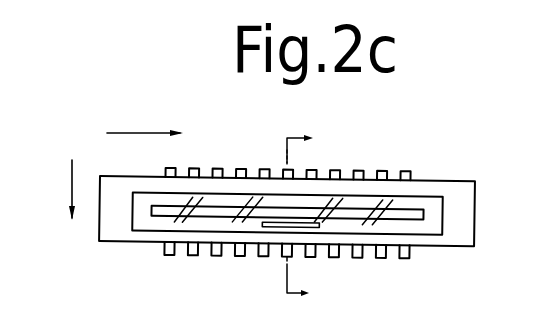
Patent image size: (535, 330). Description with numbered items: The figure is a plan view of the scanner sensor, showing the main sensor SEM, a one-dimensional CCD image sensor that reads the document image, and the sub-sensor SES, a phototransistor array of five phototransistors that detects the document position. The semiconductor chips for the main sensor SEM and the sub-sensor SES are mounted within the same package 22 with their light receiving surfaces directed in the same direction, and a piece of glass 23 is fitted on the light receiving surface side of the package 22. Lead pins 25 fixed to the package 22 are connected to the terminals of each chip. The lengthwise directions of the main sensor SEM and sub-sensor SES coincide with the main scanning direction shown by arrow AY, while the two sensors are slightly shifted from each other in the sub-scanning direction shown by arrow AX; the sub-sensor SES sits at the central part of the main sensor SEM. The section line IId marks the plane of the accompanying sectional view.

The package 22 is at (455, 246).
The piece of glass 23 is at (420, 234).
The lead pins 25 is at (380, 170).
The main sensor SEM is at (415, 208).
The sub-sensor SES is at (318, 229).
The arrow AX is at (56, 190).
The arrow AY is at (145, 122).
The section line IId is at (283, 211).